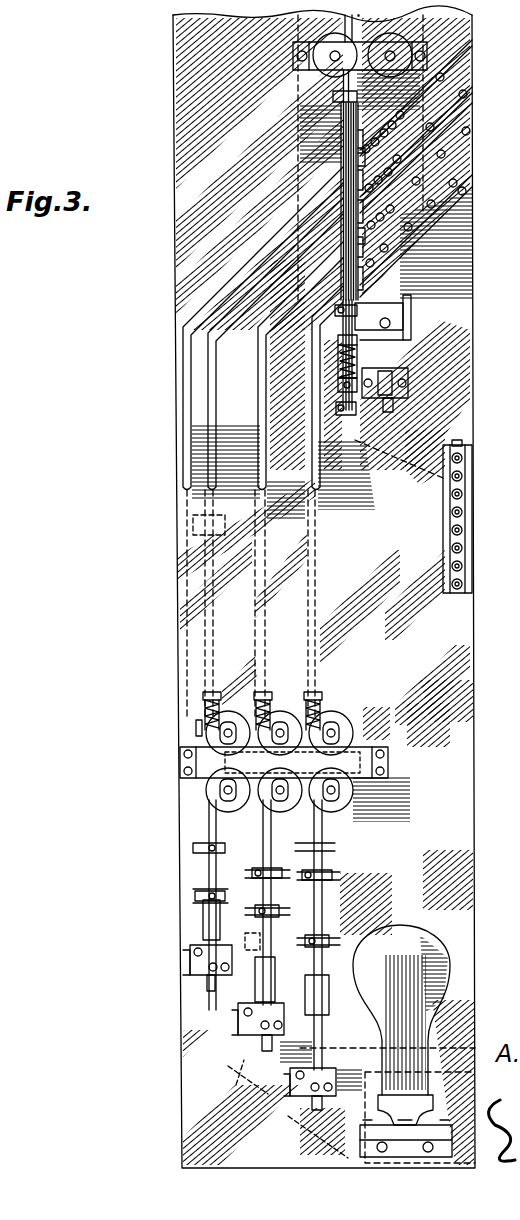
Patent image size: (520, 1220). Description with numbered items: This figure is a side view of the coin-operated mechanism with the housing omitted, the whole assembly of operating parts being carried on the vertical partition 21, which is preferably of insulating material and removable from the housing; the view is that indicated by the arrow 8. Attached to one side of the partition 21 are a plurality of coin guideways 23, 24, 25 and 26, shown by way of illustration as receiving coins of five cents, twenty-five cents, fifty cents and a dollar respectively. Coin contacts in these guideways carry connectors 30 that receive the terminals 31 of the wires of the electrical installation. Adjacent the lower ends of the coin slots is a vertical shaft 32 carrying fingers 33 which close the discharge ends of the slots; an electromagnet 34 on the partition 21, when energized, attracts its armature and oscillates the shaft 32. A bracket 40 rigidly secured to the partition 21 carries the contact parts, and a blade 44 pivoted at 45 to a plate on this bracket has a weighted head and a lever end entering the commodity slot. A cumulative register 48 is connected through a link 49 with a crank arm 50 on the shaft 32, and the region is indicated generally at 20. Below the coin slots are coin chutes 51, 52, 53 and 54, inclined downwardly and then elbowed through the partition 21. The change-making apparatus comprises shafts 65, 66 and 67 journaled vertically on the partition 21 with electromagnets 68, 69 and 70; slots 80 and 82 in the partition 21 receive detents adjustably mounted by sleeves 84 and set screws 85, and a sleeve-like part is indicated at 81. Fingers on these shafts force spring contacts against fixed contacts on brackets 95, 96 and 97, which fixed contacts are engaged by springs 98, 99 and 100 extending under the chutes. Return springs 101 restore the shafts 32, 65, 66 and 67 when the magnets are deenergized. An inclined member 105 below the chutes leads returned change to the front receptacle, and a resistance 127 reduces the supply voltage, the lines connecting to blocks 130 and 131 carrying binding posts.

The apparatus section 8 is at (484, 116).
The clamp 20 is at (330, 335).
The partition 21 is at (452, 650).
The coin guideway 23 is at (468, 188).
The coin guideway 24 is at (470, 143).
The coin guideway 25 is at (470, 100).
The coin guideway 26 is at (462, 58).
The connector 30 is at (455, 210).
The terminal 31 is at (370, 260).
The vertical shaft 32 is at (342, 155).
The fingers 33 is at (345, 228).
The electromagnet 34 is at (340, 92).
The bracket 40 is at (390, 330).
The blade 44 is at (430, 300).
The pivot 45 is at (440, 308).
The cumulative register 48 is at (398, 367).
The link 49 is at (386, 410).
The crank arm 50 is at (337, 418).
The coin chute 51 is at (325, 388).
The coin chute 52 is at (299, 366).
The coin chute 53 is at (275, 344).
The coin chute 54 is at (261, 328).
The shaft 65 is at (336, 846).
The shaft 66 is at (268, 882).
The shaft 67 is at (203, 912).
The electromagnet 68 is at (340, 712).
The electromagnet 69 is at (290, 716).
The electromagnet 70 is at (212, 735).
The slots 80 is at (332, 876).
The slide block 81 is at (314, 882).
The slots 82 is at (258, 878).
The sleeve 84 is at (305, 946).
The set screw 85 is at (312, 872).
The bracket 95 is at (380, 1060).
The bracket 96 is at (265, 1055).
The bracket 97 is at (190, 965).
The spring 98 is at (316, 1110).
The spring 99 is at (268, 1055).
The spring 100 is at (207, 995).
The spring 101 is at (322, 700).
The inclined member 105 is at (224, 1081).
The resistance 127 is at (420, 955).
The block 130 is at (445, 542).
The block 131 is at (462, 463).